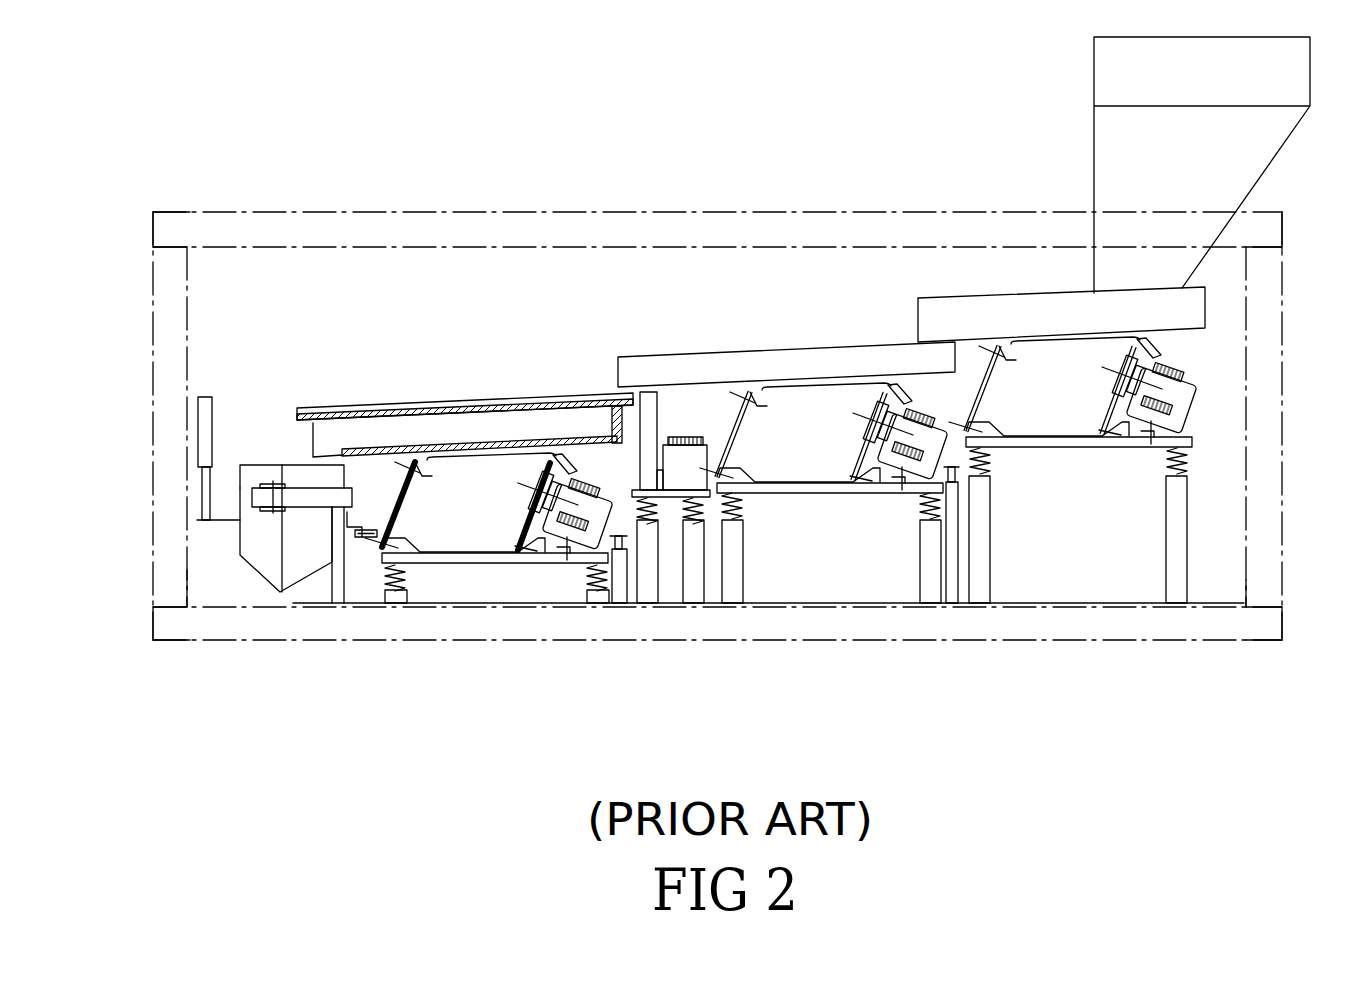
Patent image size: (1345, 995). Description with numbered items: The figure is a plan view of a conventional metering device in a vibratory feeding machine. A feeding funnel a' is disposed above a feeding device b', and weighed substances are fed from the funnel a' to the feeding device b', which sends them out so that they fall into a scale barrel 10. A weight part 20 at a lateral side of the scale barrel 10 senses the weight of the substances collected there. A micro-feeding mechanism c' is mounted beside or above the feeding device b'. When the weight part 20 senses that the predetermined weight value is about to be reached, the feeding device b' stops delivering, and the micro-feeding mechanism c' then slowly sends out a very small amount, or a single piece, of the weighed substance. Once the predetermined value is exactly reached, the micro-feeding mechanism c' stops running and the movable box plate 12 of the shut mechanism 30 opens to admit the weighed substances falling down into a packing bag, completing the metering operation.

The scale barrel 10 is at (270, 375).
The movable box plate 12 is at (273, 562).
The weight part 20 is at (358, 538).
The shut mechanism 30 is at (210, 372).
The feeding funnel a' is at (1110, 320).
The feeding device b' is at (788, 447).
The micro-feeding mechanism c' is at (465, 461).